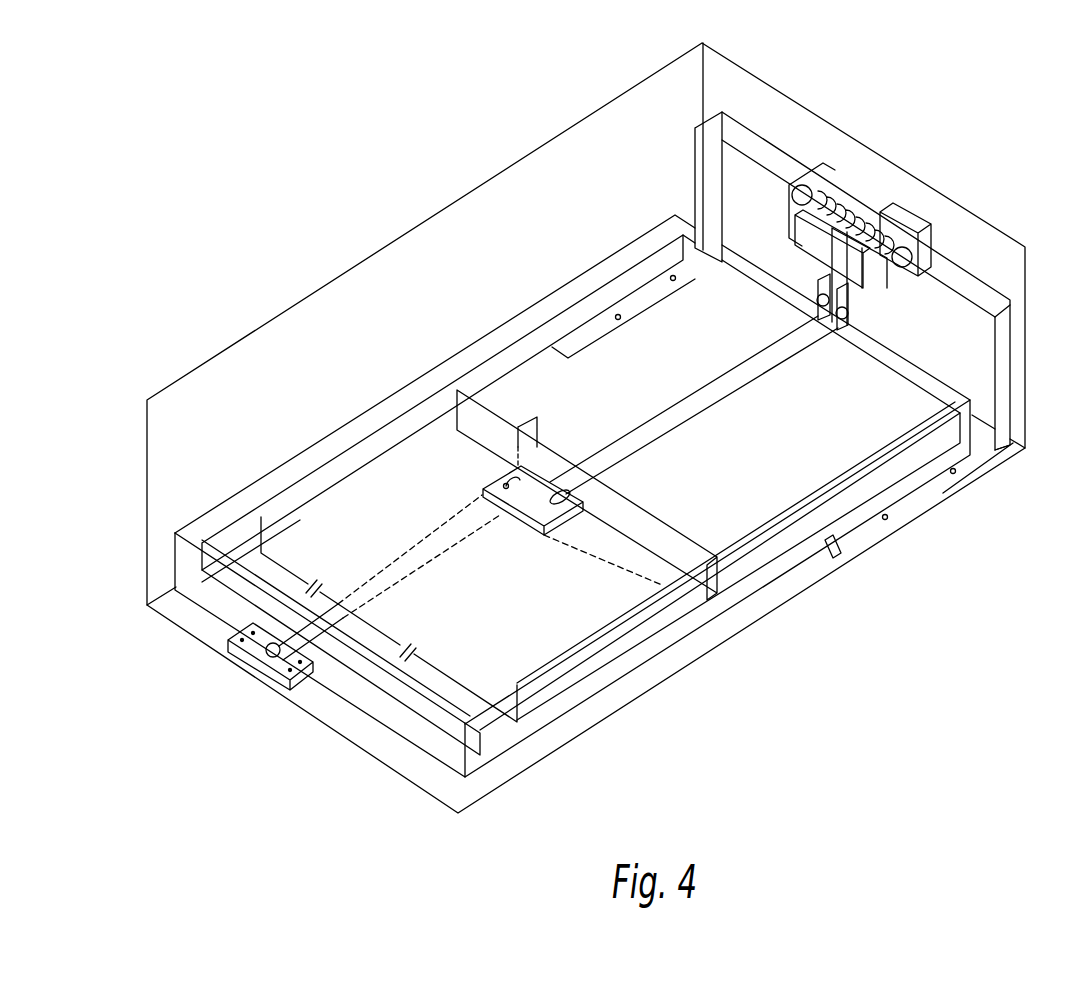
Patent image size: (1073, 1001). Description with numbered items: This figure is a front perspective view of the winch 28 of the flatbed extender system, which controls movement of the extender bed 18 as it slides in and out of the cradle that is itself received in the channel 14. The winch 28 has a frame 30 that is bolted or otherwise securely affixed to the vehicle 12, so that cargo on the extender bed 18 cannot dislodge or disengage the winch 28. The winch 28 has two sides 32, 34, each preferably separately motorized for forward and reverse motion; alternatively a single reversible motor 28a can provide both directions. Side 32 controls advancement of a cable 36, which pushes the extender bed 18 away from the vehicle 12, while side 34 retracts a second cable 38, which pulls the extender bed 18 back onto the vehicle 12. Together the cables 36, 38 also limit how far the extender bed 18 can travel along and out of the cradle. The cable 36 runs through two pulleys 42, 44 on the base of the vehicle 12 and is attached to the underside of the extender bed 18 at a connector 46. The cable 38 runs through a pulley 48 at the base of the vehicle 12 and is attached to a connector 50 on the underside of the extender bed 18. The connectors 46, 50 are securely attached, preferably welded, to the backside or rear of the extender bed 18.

The vehicle 12 is at (586, 411).
The channel 14 is at (572, 509).
The extender bed 18 is at (579, 505).
The winch 28 is at (841, 163).
The reversible motor 28a is at (880, 281).
The frame 30 is at (988, 471).
The side 32 is at (867, 220).
The side 34 is at (949, 216).
The cable 36 is at (580, 328).
The cable 38 is at (719, 480).
The pulley 42 is at (677, 206).
The pulley 44 is at (337, 612).
The connector 46 is at (545, 453).
The pulley 48 is at (892, 449).
The connector 50 is at (636, 540).